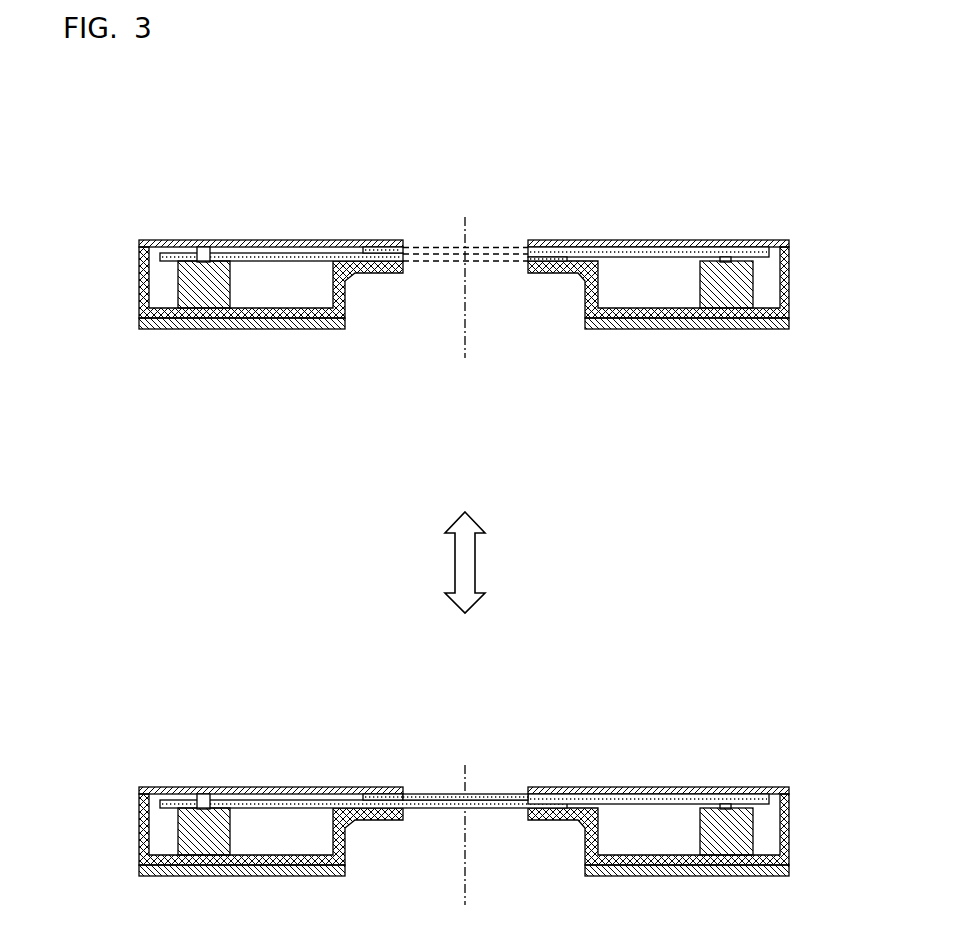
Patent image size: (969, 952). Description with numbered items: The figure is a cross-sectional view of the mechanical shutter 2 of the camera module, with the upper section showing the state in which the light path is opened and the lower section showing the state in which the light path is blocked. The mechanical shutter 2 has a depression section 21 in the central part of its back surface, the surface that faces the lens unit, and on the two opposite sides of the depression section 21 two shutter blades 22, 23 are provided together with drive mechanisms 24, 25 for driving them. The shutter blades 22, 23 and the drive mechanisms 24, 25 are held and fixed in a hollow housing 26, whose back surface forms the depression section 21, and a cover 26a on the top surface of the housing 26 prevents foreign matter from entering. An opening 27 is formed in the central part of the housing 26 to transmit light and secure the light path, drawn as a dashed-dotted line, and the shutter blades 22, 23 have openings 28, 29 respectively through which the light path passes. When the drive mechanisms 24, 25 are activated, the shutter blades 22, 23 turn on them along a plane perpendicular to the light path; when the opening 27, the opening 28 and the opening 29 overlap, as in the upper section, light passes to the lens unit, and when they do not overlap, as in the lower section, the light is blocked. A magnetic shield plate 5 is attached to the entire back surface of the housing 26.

The mechanical shutter 2 is at (711, 139).
The magnetic shield plate 5 is at (790, 320).
The depression section 21 is at (372, 283).
The shutter blade 22 is at (292, 255).
The shutter blade 23 is at (584, 250).
The drive mechanism 24 is at (200, 248).
The drive mechanism 25 is at (721, 251).
The housing 26 is at (139, 255).
The cover 26a is at (768, 244).
The opening 27 is at (407, 244).
The opening 28 is at (440, 252).
The opening 29 is at (487, 252).